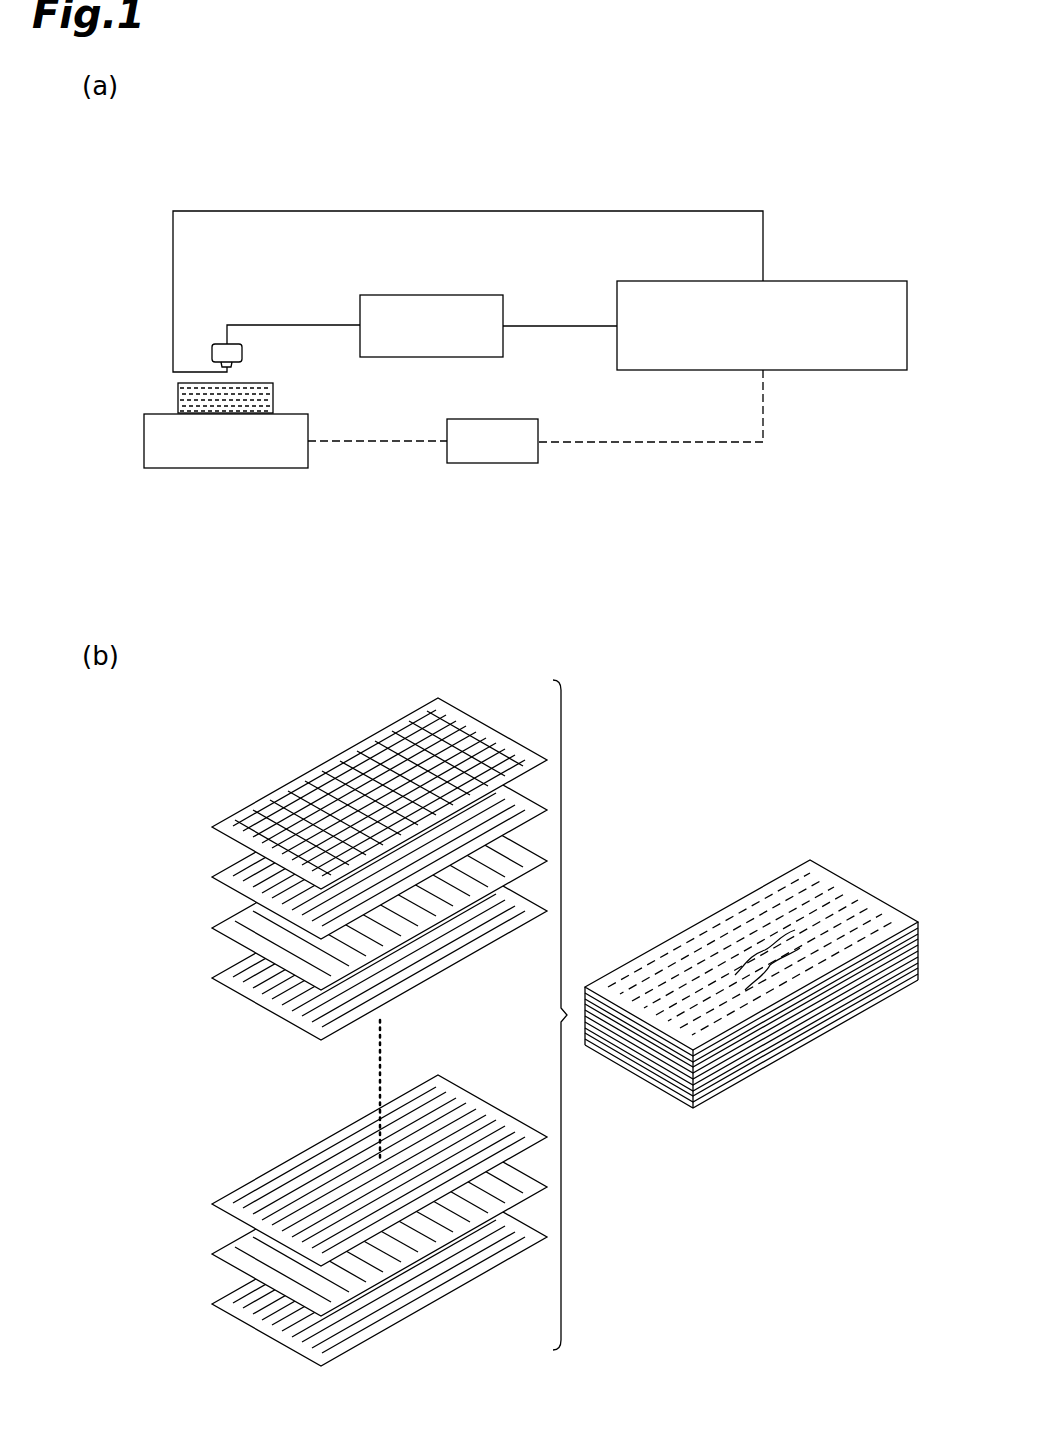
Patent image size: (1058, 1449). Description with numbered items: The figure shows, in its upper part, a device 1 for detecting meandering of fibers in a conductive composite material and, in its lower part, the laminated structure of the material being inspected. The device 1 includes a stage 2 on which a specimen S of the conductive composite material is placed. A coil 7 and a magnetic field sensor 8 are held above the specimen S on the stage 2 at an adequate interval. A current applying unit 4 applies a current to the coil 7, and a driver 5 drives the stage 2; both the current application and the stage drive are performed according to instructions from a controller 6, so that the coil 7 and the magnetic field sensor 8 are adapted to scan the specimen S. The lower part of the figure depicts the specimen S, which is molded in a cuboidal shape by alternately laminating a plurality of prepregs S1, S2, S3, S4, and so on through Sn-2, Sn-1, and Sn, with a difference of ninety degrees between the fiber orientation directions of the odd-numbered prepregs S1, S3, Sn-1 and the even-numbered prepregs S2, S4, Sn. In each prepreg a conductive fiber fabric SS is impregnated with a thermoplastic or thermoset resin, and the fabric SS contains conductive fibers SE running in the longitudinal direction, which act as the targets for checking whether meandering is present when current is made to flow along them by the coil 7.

The device for detecting meandering of fibers 1 is at (806, 176).
The stage 2 is at (288, 470).
The current applying unit 4 is at (476, 294).
The driver 5 is at (517, 465).
The controller 6 is at (867, 280).
The coil 7 is at (218, 343).
The magnetic field sensor 8 is at (233, 367).
The specimen S is at (174, 390).
The prepreg S1 is at (247, 791).
The prepreg S2 is at (338, 843).
The prepreg S3 is at (213, 935).
The prepreg S4 is at (210, 984).
The prepreg Sn-2 is at (220, 1191).
The prepreg Sn-1 is at (218, 1241).
The prepreg Sn is at (221, 1291).
The conductive fiber fabric SS is at (256, 890).
The conductive fibers SE is at (246, 899).